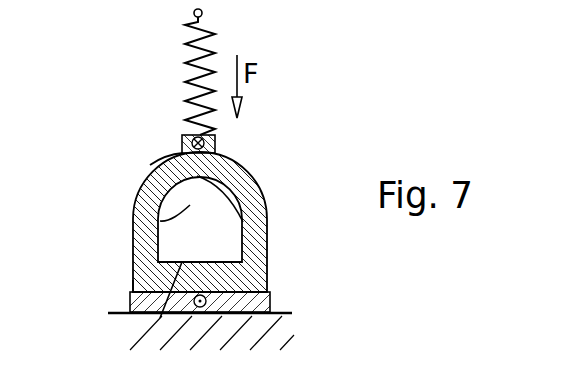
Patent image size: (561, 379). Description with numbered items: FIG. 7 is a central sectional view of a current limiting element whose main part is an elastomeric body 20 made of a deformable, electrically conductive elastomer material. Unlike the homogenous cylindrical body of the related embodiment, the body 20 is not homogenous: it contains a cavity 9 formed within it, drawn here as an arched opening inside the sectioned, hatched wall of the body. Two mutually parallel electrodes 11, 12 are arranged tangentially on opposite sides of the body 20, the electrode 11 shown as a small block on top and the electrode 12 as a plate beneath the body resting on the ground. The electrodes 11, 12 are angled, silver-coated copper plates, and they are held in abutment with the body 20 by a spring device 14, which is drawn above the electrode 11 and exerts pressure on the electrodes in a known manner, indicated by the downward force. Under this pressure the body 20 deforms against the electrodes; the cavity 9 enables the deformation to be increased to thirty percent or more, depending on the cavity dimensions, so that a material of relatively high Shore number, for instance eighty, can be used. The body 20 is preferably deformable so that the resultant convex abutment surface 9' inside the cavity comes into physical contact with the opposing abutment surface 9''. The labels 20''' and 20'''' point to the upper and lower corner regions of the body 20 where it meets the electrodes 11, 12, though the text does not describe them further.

The spring device 14 is at (190, 41).
The electrode 11 is at (216, 143).
The elastomeric body 20 is at (229, 222).
The upper corner section of support body 20''' is at (133, 149).
The lower corner section of support body 20'''' is at (96, 287).
The cavity 9 is at (145, 219).
The convex abutment surface 9' is at (248, 216).
The abutment surface 9'' is at (127, 309).
The electrode 12 is at (255, 303).